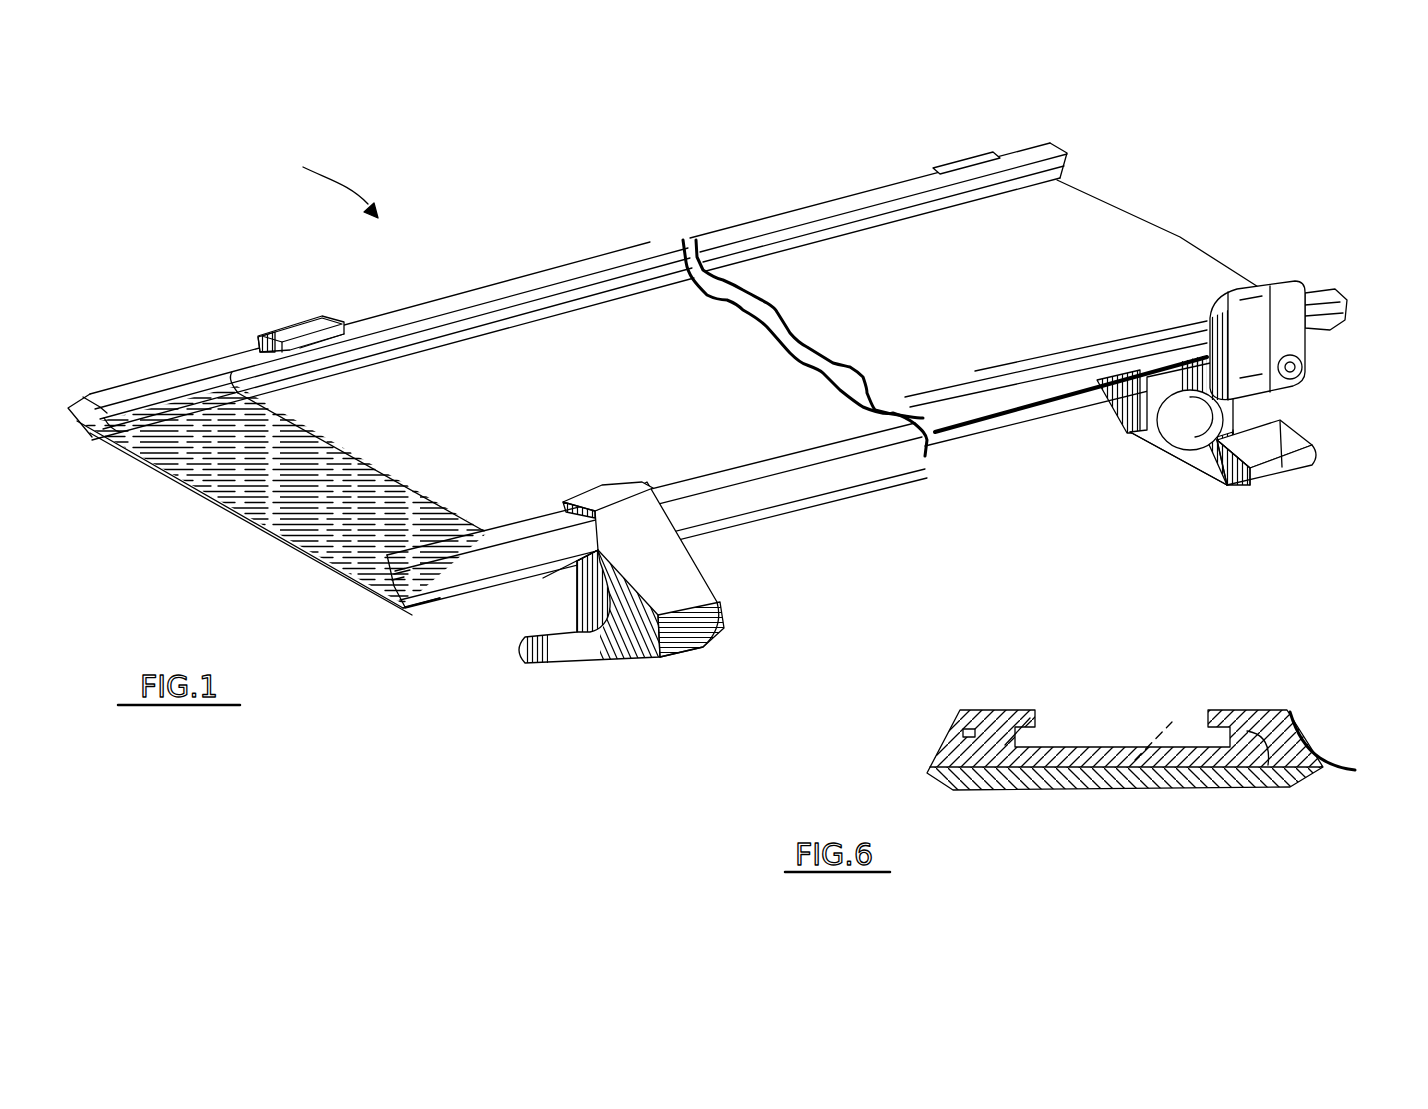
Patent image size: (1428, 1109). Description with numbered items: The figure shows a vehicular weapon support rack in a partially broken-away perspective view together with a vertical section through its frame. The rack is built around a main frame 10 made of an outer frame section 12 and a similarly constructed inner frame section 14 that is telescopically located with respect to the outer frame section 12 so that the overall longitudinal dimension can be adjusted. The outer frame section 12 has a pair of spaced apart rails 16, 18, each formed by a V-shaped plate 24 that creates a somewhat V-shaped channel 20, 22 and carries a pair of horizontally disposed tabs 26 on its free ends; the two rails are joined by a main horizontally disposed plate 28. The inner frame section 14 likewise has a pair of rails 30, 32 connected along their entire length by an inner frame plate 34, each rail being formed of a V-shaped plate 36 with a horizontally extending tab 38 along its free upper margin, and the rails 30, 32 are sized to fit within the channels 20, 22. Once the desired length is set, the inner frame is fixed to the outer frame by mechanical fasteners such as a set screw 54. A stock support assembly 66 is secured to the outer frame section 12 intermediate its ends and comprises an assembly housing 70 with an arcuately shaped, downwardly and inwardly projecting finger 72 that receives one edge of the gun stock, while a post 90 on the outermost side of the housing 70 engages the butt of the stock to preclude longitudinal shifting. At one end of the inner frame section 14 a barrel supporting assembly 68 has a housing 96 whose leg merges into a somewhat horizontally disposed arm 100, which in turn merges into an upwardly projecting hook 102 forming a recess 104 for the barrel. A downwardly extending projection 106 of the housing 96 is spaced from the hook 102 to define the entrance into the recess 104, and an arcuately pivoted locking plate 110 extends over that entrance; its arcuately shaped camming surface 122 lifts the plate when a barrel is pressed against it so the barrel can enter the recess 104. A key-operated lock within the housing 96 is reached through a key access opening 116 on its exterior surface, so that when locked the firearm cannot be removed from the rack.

In FIG. 1, the main frame 10 is at (737, 425).
In FIG. 6, the main frame 10 is at (1135, 747).
In FIG. 1, the outer frame section 12 is at (232, 346).
In FIG. 6, the outer frame section 12 is at (1322, 722).
In FIG. 1, the inner frame section 14 is at (1150, 205).
In FIG. 6, the inner frame section 14 is at (1121, 738).
In FIG. 1, the rail 16 is at (72, 405).
In FIG. 6, the rail 16 is at (950, 745).
In FIG. 1, the rail 18 is at (440, 597).
In FIG. 6, the rail 18 is at (1322, 748).
In FIG. 1, the V-shaped channel 20 is at (138, 427).
In FIG. 6, the V-shaped channel 20 is at (945, 780).
In FIG. 1, the V-shaped channel 22 is at (395, 583).
In FIG. 6, the V-shaped channel 22 is at (1330, 760).
In FIG. 1, the V-shaped plate 24 is at (78, 432).
In FIG. 6, the V-shaped plate 24 is at (955, 735).
In FIG. 1, the horizontally disposed tab 26 is at (517, 520).
In FIG. 6, the horizontally disposed tab 26 is at (975, 710).
In FIG. 1, the main horizontally disposed plate 28 is at (268, 536).
In FIG. 6, the main horizontally disposed plate 28 is at (1112, 792).
In FIG. 1, the rail 30 is at (808, 212).
In FIG. 6, the rail 30 is at (1012, 785).
In FIG. 1, the rail 32 is at (990, 400).
In FIG. 6, the rail 32 is at (1262, 768).
In FIG. 1, the inner frame plate 34 is at (448, 464).
In FIG. 6, the inner frame plate 34 is at (1185, 780).
In FIG. 1, the V-shaped plate 36 is at (1012, 725).
In FIG. 6, the V-shaped plate 36 is at (1017, 731).
In FIG. 1, the horizontally extending tab 38 is at (877, 195).
In FIG. 6, the horizontally extending tab 38 is at (1035, 725).
In FIG. 6, the set screw 54 is at (1152, 730).
In FIG. 1, the stock support assembly 66 is at (607, 619).
In FIG. 1, the barrel supporting assembly 68 is at (1230, 366).
In FIG. 1, the assembly housing 70 is at (598, 657).
In FIG. 1, the finger 72 is at (688, 640).
In FIG. 1, the post 90 is at (585, 602).
In FIG. 1, the housing 96 is at (1312, 356).
In FIG. 1, the arm 100 is at (1200, 460).
In FIG. 1, the hook 102 is at (1292, 445).
In FIG. 1, the recess 104 is at (1177, 428).
In FIG. 1, the projection 106 is at (1292, 306).
In FIG. 1, the locking plate 110 is at (1180, 378).
In FIG. 1, the key access opening 116 is at (1302, 368).
In FIG. 1, the camming surface 122 is at (1230, 410).